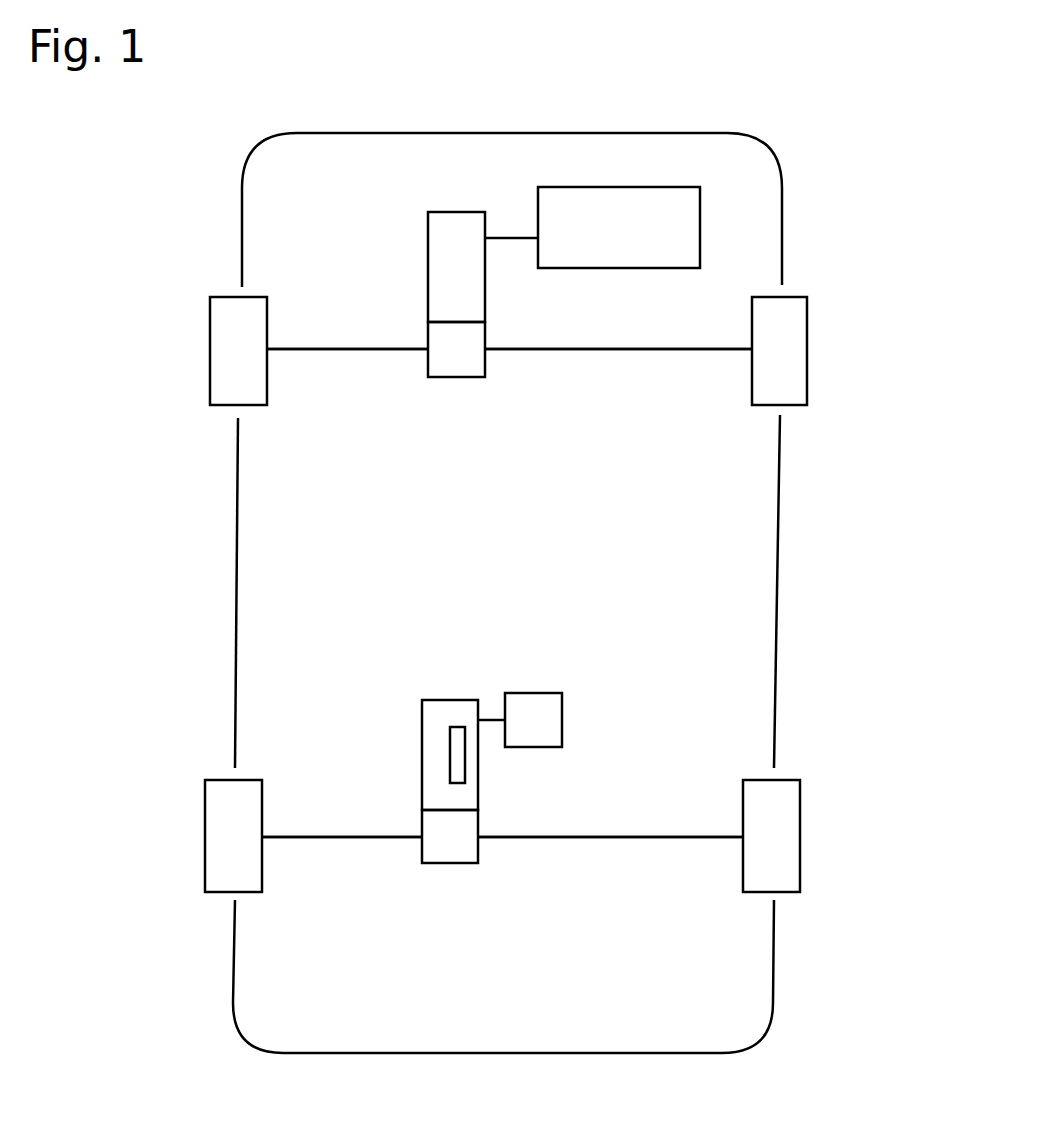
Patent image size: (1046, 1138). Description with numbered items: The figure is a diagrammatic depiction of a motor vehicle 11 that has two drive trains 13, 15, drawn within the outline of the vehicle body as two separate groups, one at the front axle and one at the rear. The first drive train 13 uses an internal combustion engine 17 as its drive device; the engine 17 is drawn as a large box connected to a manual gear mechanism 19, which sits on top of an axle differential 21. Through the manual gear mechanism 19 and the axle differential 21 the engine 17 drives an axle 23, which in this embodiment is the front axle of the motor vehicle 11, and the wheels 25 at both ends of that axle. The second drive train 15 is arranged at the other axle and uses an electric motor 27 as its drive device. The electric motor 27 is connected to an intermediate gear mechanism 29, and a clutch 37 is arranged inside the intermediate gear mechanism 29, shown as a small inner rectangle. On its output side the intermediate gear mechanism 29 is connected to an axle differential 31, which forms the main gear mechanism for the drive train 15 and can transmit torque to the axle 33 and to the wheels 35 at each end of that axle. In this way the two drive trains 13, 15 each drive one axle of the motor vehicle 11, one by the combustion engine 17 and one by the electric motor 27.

The motor vehicle 11 is at (703, 112).
The drive train 13 is at (372, 256).
The drive train 15 is at (495, 628).
The internal combustion engine 17 is at (662, 222).
The manual gear mechanism 19 is at (445, 237).
The axle differential 21 is at (450, 373).
The axle 23 is at (346, 352).
The wheels 25 is at (225, 348).
The electric motor 27 is at (530, 707).
The intermediate gear mechanism 29 is at (450, 715).
The axle differential 31 is at (445, 850).
The axle 33 is at (350, 840).
The wheels 35 is at (230, 835).
The clutch 37 is at (458, 762).